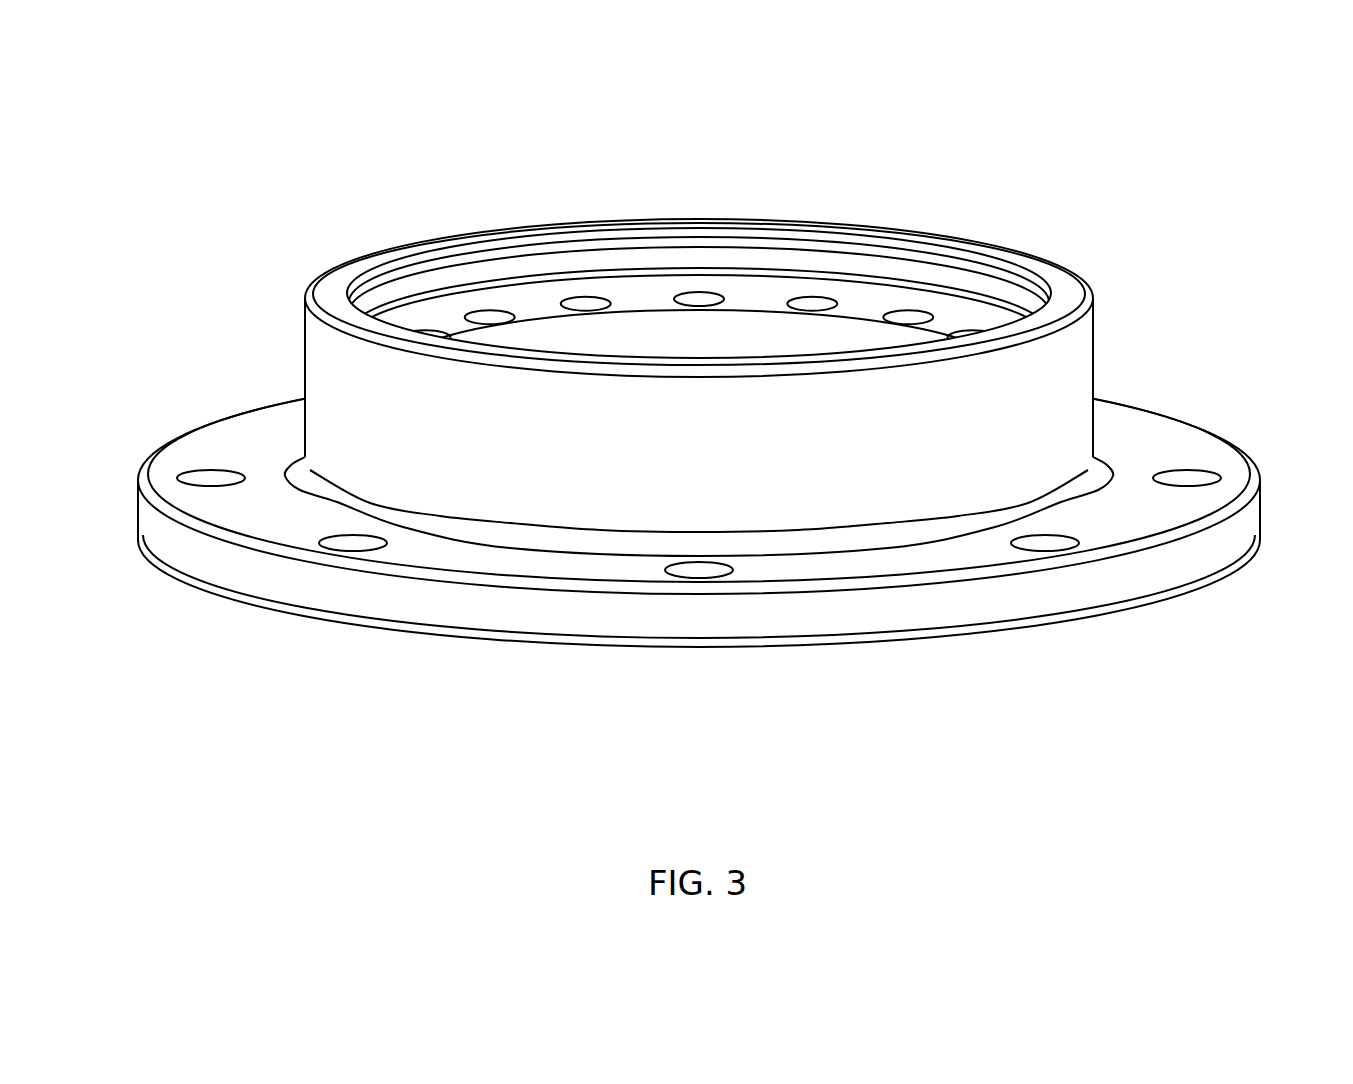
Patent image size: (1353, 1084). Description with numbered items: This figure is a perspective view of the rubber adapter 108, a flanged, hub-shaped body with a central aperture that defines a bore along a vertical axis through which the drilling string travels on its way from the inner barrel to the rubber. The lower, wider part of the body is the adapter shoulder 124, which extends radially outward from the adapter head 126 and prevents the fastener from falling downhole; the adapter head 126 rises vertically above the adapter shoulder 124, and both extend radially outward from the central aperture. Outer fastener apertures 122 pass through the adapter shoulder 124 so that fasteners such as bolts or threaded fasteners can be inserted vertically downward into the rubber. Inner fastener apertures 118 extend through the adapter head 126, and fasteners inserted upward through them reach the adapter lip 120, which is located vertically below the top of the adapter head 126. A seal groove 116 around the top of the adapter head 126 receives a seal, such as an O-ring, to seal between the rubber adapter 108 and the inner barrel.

The rubber adapter 108 is at (1157, 443).
The seal groove 116 is at (426, 258).
The inner fastener apertures 118 is at (583, 300).
The adapter lip 120 is at (645, 297).
The outer fastener apertures 122 is at (1042, 545).
The adapter shoulder 124 is at (865, 605).
The adapter head 126 is at (1060, 373).